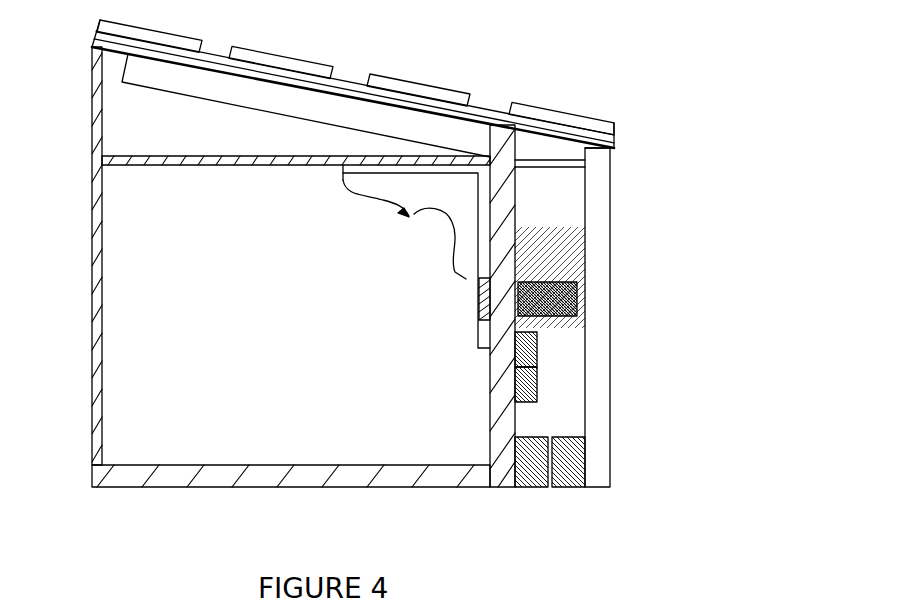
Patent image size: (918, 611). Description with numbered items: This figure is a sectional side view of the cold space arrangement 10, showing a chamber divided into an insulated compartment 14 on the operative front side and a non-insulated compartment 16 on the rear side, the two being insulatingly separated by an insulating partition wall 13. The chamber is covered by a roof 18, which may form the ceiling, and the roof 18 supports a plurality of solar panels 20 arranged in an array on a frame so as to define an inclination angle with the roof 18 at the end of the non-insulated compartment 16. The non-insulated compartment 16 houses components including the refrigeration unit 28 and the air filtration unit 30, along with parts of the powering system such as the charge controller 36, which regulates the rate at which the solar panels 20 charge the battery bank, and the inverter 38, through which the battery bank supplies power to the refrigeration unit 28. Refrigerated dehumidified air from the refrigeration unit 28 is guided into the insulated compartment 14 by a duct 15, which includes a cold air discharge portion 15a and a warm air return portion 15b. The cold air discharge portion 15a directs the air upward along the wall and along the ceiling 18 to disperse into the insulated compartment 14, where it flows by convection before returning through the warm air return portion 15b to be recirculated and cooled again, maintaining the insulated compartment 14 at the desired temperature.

The cold space arrangement 10 is at (700, 113).
The insulating partition wall 13 is at (503, 218).
The insulated compartment 14 is at (222, 400).
The duct 15 is at (416, 260).
The cold air discharge portion 15a is at (337, 172).
The warm air return portion 15b is at (476, 323).
The non-insulated compartment 16 is at (573, 366).
The roof 18 is at (140, 165).
The solar panels 20 is at (433, 85).
The refrigeration unit 28 is at (575, 293).
The air filtration unit 30 is at (547, 252).
The charge controller 36 is at (527, 378).
The inverter 38 is at (518, 343).